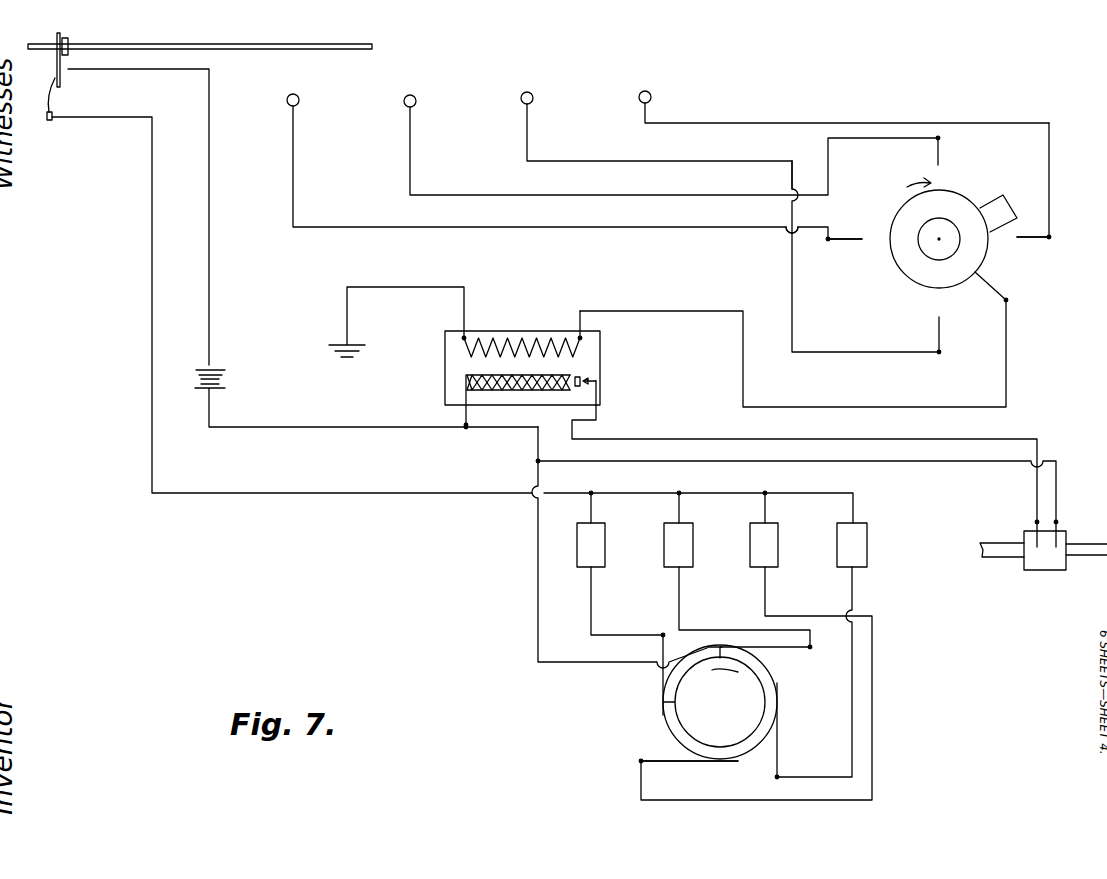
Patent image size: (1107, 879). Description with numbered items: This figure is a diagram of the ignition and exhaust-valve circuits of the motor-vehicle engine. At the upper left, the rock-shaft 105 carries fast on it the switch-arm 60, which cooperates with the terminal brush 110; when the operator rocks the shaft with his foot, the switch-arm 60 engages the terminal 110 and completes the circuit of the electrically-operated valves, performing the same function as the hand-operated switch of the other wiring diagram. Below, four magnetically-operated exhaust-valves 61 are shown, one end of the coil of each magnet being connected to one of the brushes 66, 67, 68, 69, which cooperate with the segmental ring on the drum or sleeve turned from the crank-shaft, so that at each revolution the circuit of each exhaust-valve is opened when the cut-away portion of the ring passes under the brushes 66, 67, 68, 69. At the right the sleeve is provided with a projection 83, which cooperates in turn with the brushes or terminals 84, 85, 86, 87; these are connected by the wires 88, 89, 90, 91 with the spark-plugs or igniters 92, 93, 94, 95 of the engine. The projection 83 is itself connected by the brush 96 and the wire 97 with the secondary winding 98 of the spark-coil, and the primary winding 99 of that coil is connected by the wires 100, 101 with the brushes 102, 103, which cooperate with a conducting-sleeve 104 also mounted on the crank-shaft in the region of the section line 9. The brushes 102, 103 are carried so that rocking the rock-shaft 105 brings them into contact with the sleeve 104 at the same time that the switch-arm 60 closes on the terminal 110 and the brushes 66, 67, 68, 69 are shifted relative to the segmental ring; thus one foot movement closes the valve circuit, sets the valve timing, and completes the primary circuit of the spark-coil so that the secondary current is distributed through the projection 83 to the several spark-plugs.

The section line 9 is at (1002, 558).
The switch-arm 60 is at (57, 70).
The magnetically-operated exhaust-valve 61 is at (652, 551).
The contact-brush 66 is at (660, 682).
The contact-brush 67 is at (688, 755).
The contact-brush 68 is at (778, 746).
The contact-brush 69 is at (778, 647).
The projection 83 is at (1003, 198).
The terminal brush 84 is at (937, 156).
The terminal brush 85 is at (846, 239).
The terminal brush 86 is at (938, 328).
The terminal brush 87 is at (1031, 227).
The wire 88 is at (872, 140).
The wire 89 is at (745, 228).
The wire 90 is at (706, 167).
The wire 91 is at (775, 123).
The spark-plug 92 is at (415, 105).
The spark-plug 93 is at (298, 104).
The spark-plug 94 is at (532, 102).
The spark-plug 95 is at (640, 102).
The brush 96 is at (990, 284).
The wire 97 is at (1006, 350).
The secondary winding 98 is at (527, 340).
The primary winding 99 is at (553, 392).
The wire 100 is at (634, 439).
The wire 101 is at (797, 494).
The brush 102 is at (1035, 525).
The brush 103 is at (1060, 525).
The conducting-sleeve 104 is at (1048, 570).
The rock-shaft 105 is at (268, 50).
The terminal brush 110 is at (53, 100).